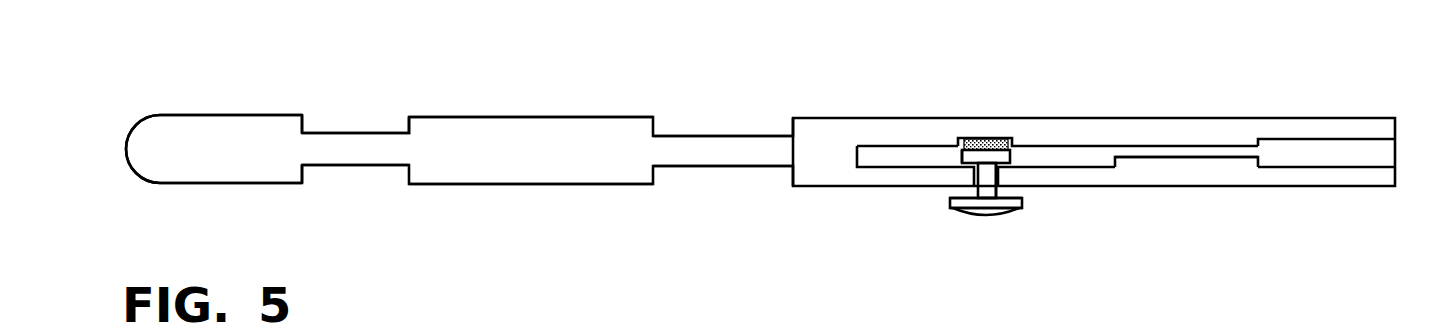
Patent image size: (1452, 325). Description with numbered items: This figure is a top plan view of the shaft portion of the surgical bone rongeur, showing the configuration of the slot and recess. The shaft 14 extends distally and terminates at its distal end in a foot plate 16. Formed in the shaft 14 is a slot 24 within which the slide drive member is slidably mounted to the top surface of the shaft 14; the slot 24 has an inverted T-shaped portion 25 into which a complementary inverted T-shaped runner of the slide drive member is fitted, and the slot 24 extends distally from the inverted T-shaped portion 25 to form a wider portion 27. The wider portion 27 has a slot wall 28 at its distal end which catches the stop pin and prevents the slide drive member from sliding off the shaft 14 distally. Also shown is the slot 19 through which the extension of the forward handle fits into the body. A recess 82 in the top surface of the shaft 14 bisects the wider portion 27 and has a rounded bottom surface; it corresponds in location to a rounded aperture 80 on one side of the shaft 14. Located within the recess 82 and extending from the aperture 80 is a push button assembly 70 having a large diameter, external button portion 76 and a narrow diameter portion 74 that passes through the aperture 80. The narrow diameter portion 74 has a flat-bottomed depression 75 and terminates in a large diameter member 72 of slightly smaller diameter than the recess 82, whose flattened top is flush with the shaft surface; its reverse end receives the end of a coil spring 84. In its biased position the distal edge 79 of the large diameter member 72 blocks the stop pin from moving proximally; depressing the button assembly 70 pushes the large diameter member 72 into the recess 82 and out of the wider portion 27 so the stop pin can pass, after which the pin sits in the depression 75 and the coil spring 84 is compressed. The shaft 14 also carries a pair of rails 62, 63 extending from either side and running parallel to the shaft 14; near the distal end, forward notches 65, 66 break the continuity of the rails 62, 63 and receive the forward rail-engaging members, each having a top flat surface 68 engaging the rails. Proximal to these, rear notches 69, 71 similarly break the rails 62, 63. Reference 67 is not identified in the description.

The shaft 14 is at (800, 192).
The foot plate 16 is at (134, 142).
The slot 19 is at (1317, 155).
The slot 24 is at (1175, 145).
The inverted T-shaped portion 25 is at (1235, 153).
The wider portion 27 is at (893, 157).
The slot wall 28 is at (850, 158).
The rail 62 is at (227, 183).
The rail 63 is at (223, 115).
The forward notch 65 is at (395, 133).
The forward notch 66 is at (358, 165).
The upper shoulder 67 is at (300, 117).
The top flat surface 68 is at (302, 183).
The rear notch 69 is at (707, 135).
The push button assembly 70 is at (1008, 226).
The rear notch 71 is at (718, 166).
The large diameter member 72 is at (960, 144).
The narrow diameter portion 74 is at (953, 193).
The depression 75 is at (984, 170).
The external button portion 76 is at (1005, 216).
The distal edge 79 is at (960, 153).
The rounded aperture 80 is at (1003, 176).
The recess 82 is at (1012, 140).
The coil spring 84 is at (985, 138).